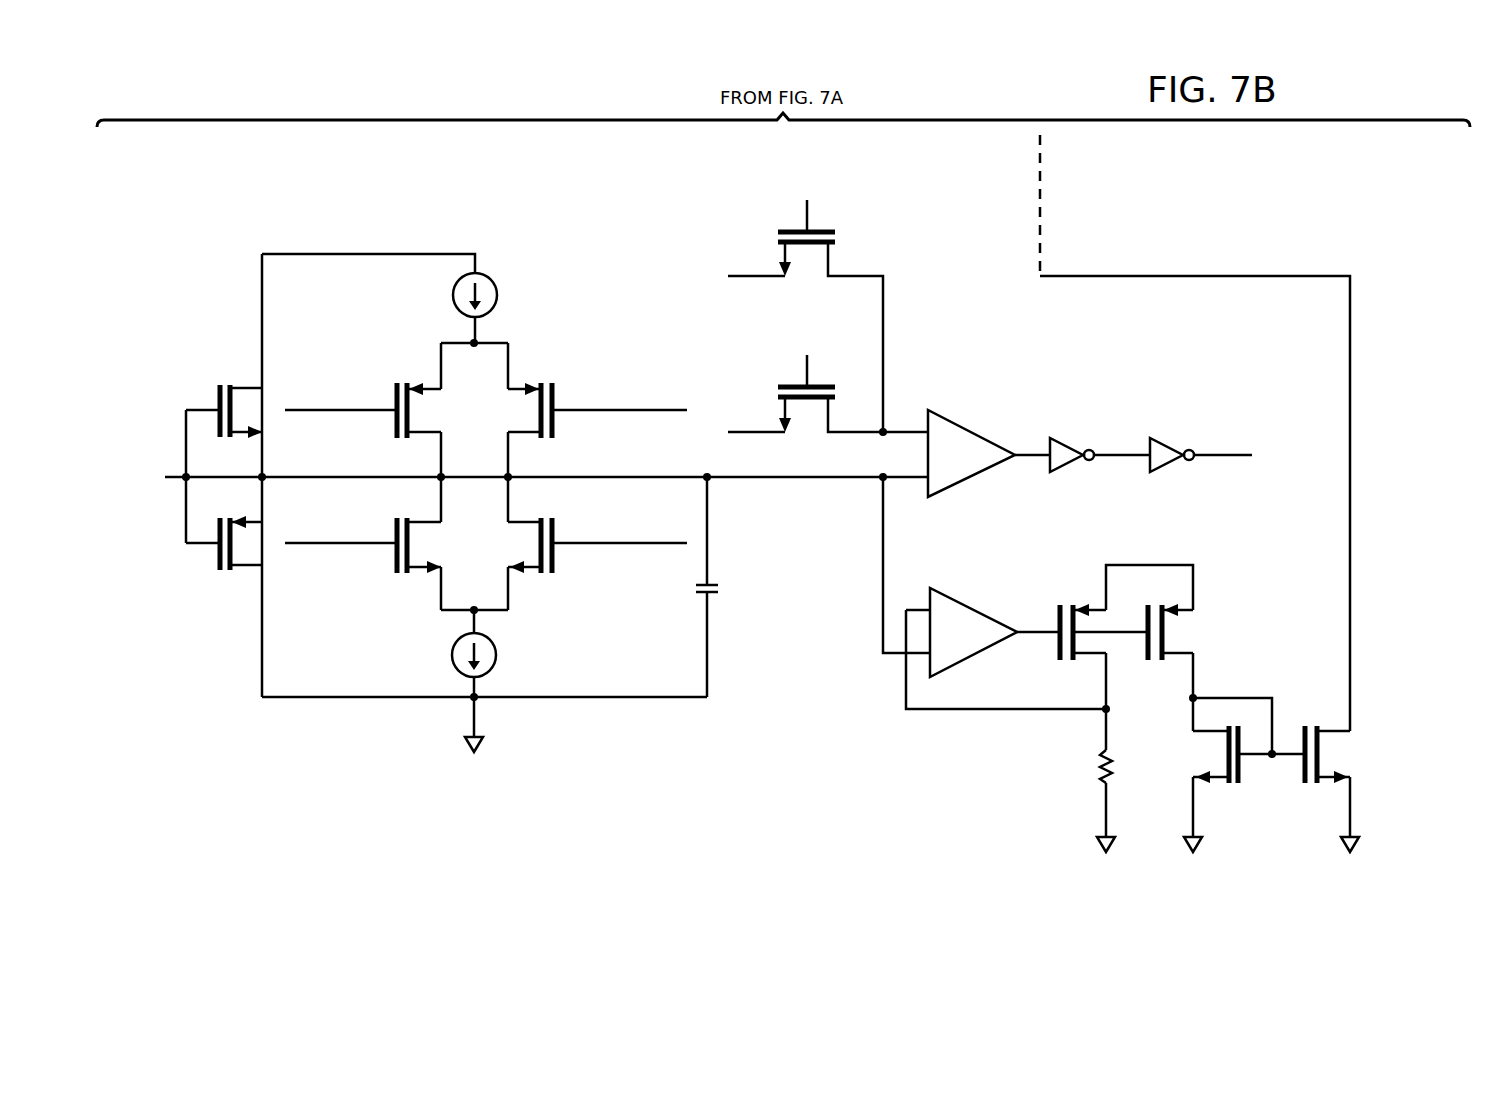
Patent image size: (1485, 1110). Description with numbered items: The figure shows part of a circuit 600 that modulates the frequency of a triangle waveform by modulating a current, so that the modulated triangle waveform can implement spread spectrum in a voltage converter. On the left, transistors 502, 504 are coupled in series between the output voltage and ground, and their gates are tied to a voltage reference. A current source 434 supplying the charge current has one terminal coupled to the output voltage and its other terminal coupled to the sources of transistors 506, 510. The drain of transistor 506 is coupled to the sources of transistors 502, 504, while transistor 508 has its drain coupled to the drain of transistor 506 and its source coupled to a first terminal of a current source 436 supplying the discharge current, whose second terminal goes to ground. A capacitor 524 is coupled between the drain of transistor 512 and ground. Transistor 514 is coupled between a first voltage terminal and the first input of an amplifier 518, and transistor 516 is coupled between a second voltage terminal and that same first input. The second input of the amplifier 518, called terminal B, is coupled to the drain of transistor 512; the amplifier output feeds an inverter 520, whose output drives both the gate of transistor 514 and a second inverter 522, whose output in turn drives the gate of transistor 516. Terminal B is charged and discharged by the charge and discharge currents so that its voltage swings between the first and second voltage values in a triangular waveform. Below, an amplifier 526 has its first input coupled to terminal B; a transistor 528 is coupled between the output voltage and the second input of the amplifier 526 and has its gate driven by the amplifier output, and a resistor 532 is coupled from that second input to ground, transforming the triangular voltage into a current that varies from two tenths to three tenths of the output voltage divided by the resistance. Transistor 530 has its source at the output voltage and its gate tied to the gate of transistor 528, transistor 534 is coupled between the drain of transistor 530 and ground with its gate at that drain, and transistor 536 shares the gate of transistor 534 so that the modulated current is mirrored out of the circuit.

The circuit 600 is at (480, 206).
The current source I_CHG 434 is at (453, 298).
The current source I_DIS 436 is at (452, 652).
The transistor 502 is at (218, 402).
The transistor 504 is at (218, 556).
The transistor 506 is at (393, 426).
The transistor 508 is at (393, 560).
The transistor 510 is at (556, 425).
The transistor 512 is at (556, 560).
The transistor 514 is at (790, 232).
The transistor 516 is at (790, 387).
The amplifier 518 is at (975, 432).
The inverter 520 is at (1066, 470).
The inverter 522 is at (1166, 470).
The capacitor 524 is at (720, 593).
The amplifier 526 is at (976, 607).
The transistor 528 is at (1051, 616).
The transistor 530 is at (1145, 656).
The resistor 532 is at (1100, 768).
The transistor 534 is at (1241, 768).
The transistor 536 is at (1292, 736).